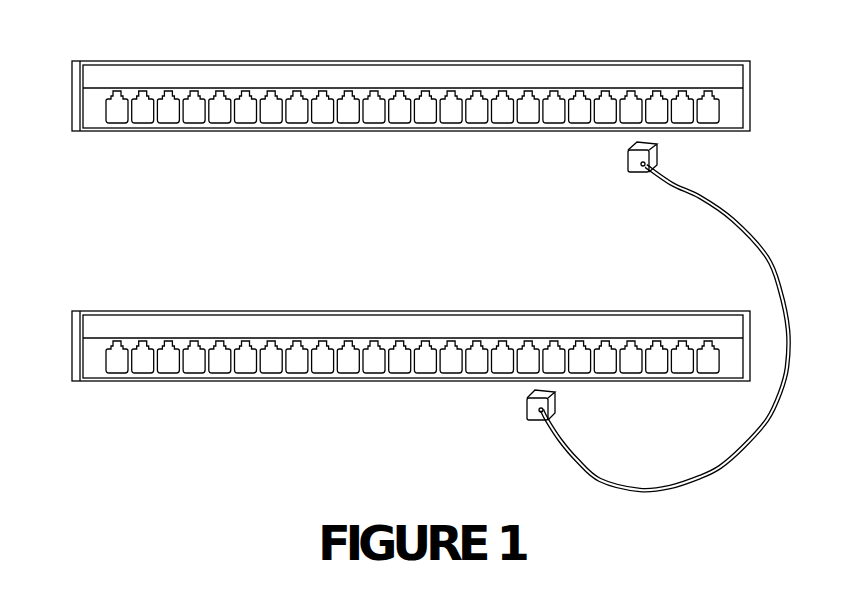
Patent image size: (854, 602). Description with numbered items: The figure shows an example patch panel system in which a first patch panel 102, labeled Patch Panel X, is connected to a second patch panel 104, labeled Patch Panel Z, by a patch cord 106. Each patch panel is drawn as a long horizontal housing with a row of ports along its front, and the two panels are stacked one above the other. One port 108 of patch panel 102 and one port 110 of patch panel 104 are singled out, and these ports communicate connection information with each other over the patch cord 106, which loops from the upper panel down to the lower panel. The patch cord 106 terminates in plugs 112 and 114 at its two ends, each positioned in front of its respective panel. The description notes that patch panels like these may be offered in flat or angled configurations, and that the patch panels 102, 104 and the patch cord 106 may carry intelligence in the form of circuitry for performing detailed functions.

The patch panel 102 is at (395, 70).
The patch panel 104 is at (401, 321).
The patch cord 106 is at (703, 470).
The port 108 is at (633, 108).
The port 110 is at (528, 362).
The plug connector 112 is at (656, 161).
The plug connector 114 is at (554, 409).